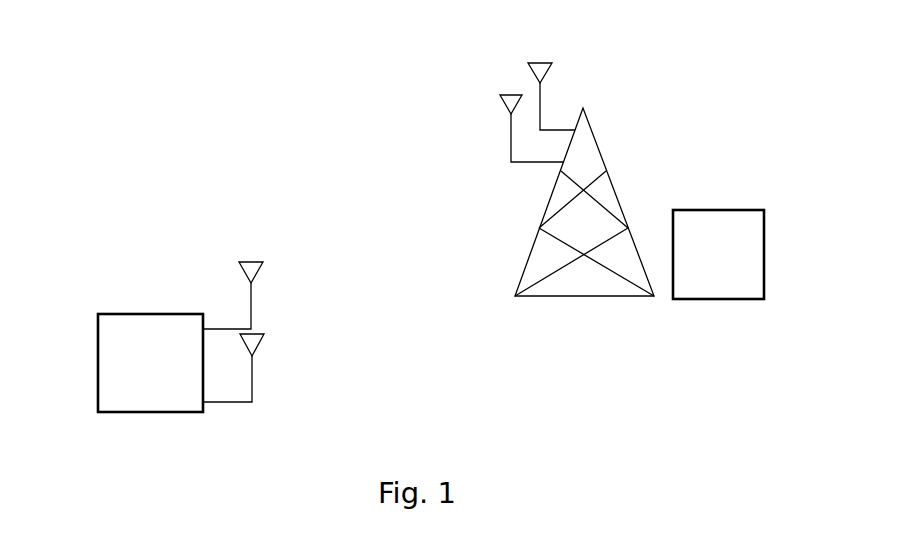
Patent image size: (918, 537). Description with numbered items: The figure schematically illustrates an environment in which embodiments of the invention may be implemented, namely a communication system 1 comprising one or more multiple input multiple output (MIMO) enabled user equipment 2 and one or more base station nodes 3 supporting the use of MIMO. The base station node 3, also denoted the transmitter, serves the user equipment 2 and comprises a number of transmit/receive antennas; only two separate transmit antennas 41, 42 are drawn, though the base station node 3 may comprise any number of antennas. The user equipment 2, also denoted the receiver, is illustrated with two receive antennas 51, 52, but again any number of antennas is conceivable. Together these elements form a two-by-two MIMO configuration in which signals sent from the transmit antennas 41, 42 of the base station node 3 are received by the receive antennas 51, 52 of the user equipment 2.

The communication system 1 is at (226, 76).
The user equipment 2 is at (113, 400).
The base station node 3 is at (753, 261).
The transmit antenna 41 is at (546, 73).
The transmit antenna 42 is at (501, 107).
The receive antenna 51 is at (243, 275).
The receive antenna 52 is at (258, 347).